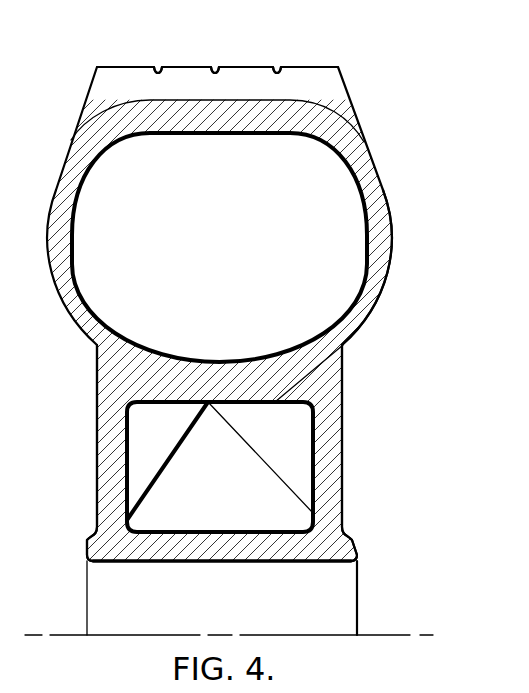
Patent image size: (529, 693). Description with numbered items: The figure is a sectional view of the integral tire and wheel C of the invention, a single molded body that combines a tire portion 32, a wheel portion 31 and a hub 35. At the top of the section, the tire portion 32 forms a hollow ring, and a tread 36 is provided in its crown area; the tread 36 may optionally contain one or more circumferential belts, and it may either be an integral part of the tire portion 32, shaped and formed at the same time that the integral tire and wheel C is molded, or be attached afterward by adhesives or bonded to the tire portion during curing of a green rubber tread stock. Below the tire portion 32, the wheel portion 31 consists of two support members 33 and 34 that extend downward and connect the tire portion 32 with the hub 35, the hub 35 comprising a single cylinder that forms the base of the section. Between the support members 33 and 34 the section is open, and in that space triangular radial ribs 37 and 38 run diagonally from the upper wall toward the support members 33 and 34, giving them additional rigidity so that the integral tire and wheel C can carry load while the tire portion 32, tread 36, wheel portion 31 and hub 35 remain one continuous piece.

The wheel portion 31 is at (343, 425).
The tire portion 32 is at (63, 177).
The support member 33 is at (112, 468).
The support member 34 is at (328, 482).
The hub 35 is at (117, 550).
The tread 36 is at (340, 70).
The triangular radial rib 37 is at (292, 457).
The triangular radial rib 38 is at (145, 438).
The integral tire and wheel C is at (377, 160).